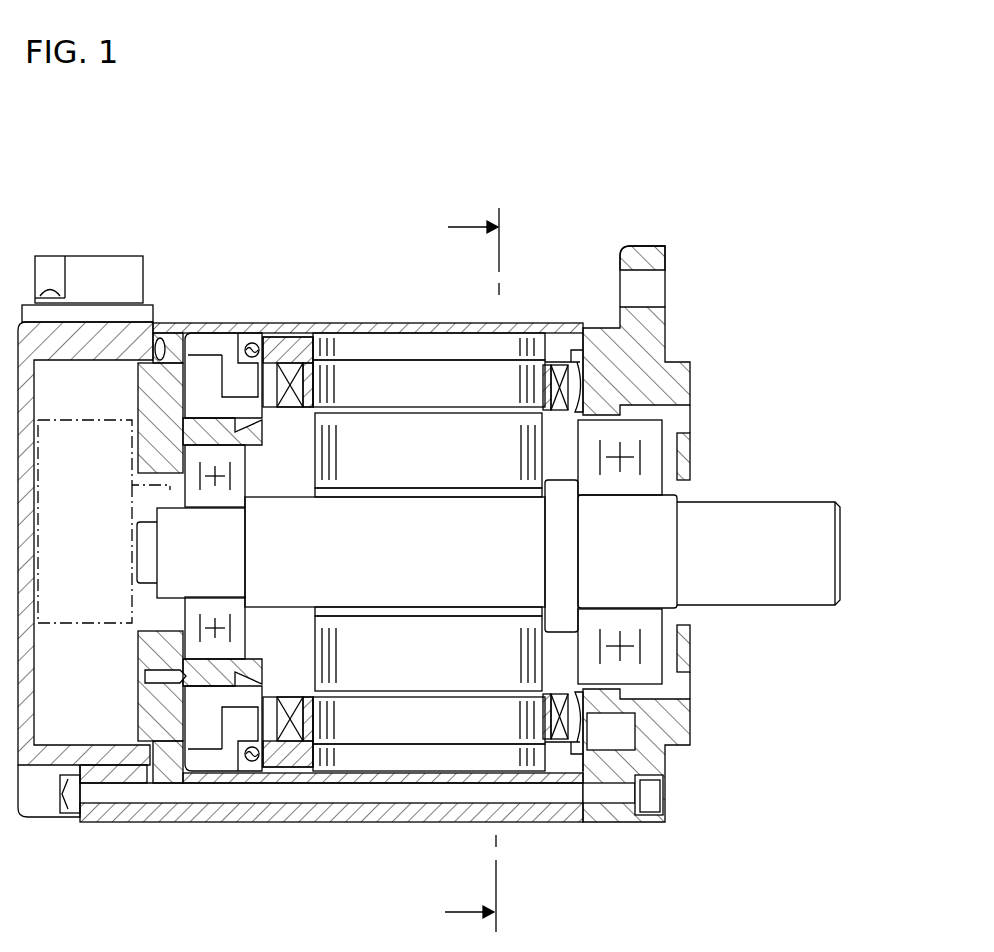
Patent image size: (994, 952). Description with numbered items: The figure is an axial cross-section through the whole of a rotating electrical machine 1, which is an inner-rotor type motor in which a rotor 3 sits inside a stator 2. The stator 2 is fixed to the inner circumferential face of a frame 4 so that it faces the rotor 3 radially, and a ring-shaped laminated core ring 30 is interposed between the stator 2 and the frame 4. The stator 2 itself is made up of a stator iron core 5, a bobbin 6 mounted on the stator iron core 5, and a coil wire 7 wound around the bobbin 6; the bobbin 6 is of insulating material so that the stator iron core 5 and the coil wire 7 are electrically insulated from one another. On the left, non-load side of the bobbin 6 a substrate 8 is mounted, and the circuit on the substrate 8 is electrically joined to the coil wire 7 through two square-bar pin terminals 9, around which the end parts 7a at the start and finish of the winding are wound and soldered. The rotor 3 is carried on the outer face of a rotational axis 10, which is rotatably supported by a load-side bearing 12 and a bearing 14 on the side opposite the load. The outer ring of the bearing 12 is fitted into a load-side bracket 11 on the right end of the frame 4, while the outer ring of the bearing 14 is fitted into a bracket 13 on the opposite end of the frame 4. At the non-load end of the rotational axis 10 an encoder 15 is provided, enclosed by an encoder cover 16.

The rotating electrical machine 1 is at (745, 293).
The stator 2 is at (423, 353).
The rotor 3 is at (400, 692).
The frame 4 is at (347, 784).
The stator iron core 5 is at (485, 367).
The bobbin 6 is at (281, 343).
The coil wire 7 is at (290, 370).
The end parts 7a is at (257, 356).
The substrate 8 is at (250, 377).
The pin terminals 9 is at (258, 377).
The rotational axis 10 is at (748, 512).
The load-side bracket 11 is at (676, 735).
The bearing 12 is at (652, 655).
The bracket 13 is at (186, 818).
The bearing 14 is at (182, 758).
The encoder 15 is at (88, 420).
The encoder cover 16 is at (125, 820).
The laminated core ring 30 is at (363, 345).